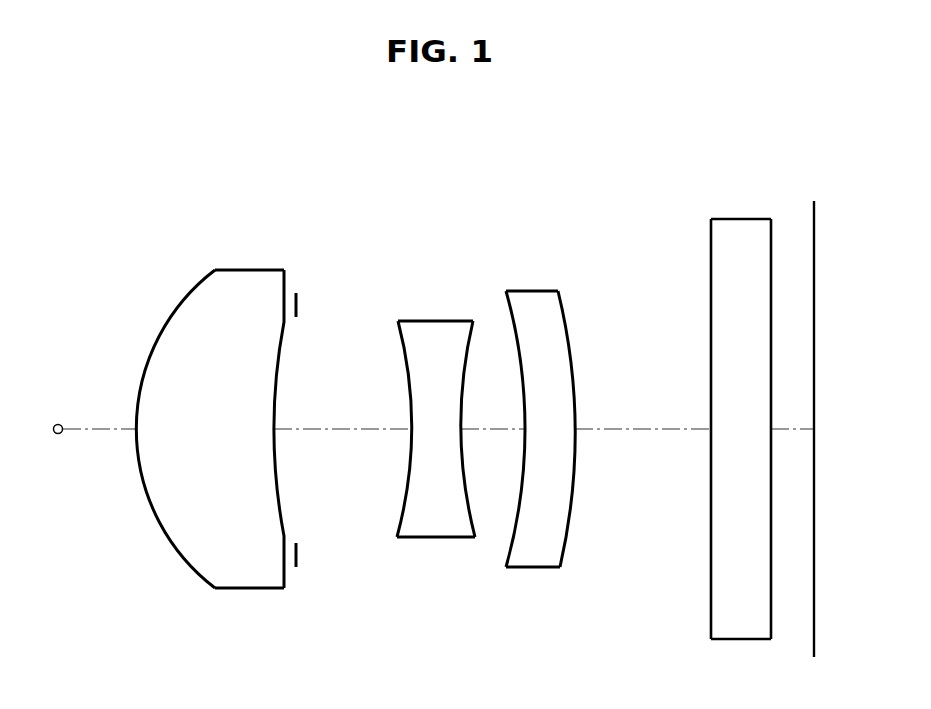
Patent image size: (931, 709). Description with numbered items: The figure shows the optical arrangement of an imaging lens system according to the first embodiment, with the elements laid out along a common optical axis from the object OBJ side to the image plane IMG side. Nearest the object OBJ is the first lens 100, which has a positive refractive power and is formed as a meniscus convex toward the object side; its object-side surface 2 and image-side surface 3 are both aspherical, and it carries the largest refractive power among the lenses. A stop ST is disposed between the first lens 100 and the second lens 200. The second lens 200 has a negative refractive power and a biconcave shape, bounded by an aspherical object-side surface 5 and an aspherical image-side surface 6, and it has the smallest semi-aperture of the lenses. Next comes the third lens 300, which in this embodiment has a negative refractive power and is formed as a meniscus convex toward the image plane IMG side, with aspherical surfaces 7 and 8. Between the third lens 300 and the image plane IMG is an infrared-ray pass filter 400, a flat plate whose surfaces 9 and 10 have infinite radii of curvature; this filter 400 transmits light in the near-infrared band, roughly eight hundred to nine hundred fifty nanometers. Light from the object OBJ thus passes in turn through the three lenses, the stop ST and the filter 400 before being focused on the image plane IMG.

The object-side surface of first lens 2 is at (194, 289).
The image-side surface of first lens 3 is at (283, 326).
The object-side surface of second lens 5 is at (403, 345).
The image-side surface of second lens 6 is at (469, 347).
The object-side surface of third lens 7 is at (511, 336).
The image-side surface of third lens 8 is at (563, 318).
The object-side surface of IR pass filter 9 is at (710, 248).
The image-side surface of IR pass filter 10 is at (772, 248).
The first lens 100 is at (210, 453).
The second lens 200 is at (435, 464).
The third lens 300 is at (538, 464).
The IR pass filter 400 is at (742, 423).
The stop ST is at (300, 557).
The object OBJ is at (58, 424).
The image plane IMG is at (816, 627).